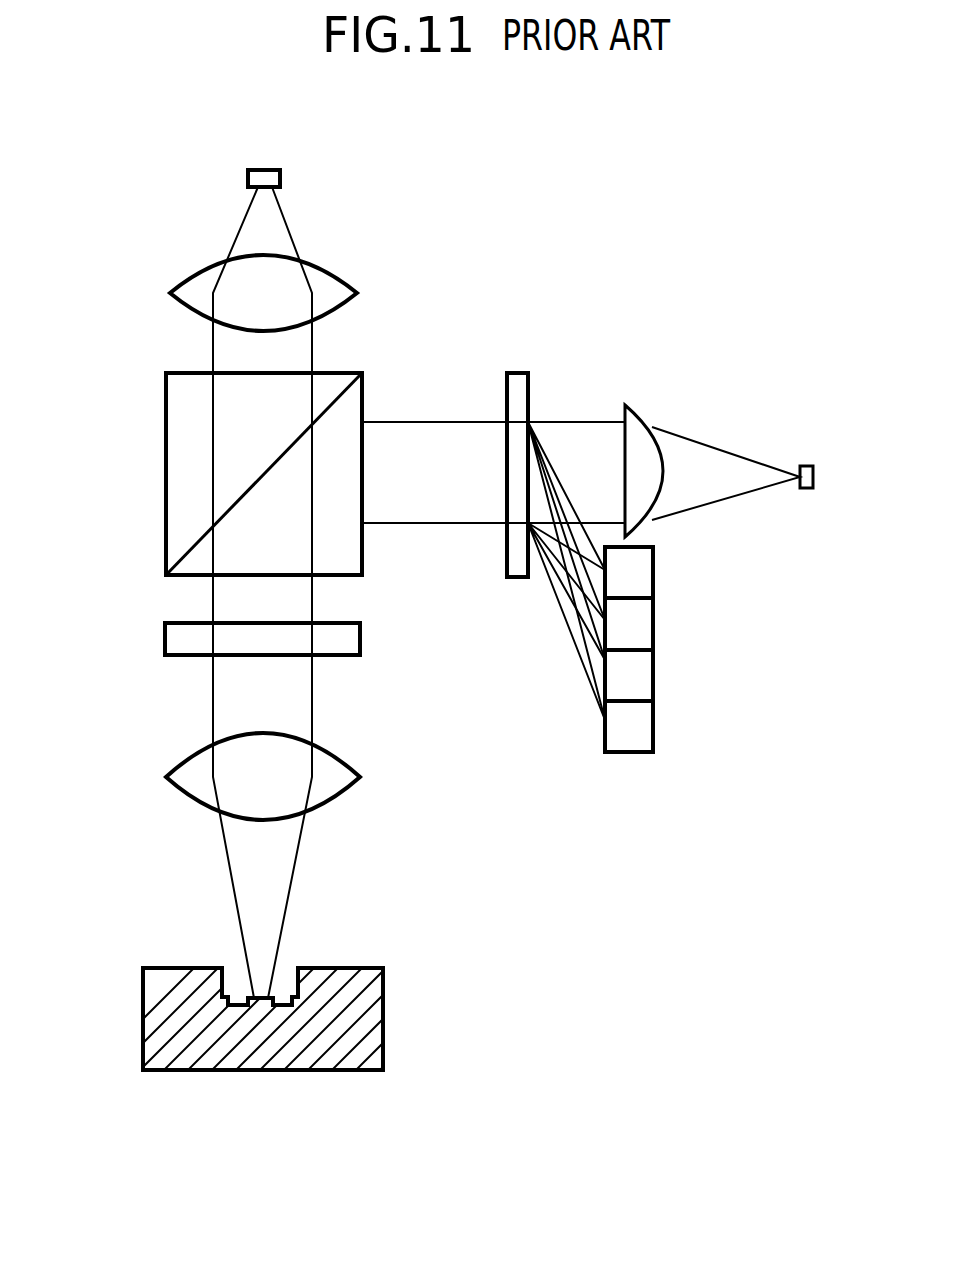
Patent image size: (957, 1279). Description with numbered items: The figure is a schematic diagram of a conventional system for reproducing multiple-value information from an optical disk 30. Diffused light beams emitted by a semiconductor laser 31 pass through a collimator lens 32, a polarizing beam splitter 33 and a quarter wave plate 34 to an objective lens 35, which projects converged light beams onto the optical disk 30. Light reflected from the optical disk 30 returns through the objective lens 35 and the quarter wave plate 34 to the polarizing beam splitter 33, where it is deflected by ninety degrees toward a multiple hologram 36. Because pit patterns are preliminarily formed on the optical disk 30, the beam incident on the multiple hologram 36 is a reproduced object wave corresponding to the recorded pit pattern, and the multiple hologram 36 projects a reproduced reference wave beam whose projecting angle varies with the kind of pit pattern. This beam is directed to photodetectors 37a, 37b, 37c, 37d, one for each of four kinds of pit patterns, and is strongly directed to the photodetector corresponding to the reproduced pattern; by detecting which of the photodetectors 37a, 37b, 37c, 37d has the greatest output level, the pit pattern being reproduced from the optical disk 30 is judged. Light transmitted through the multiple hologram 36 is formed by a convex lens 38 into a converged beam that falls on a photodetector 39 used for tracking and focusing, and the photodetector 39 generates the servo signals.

The optical disk 30 is at (170, 1060).
The semiconductor laser 31 is at (248, 178).
The collimator lens 32 is at (190, 279).
The polarizing beam splitter 33 is at (166, 415).
The quarter wave plate 34 is at (166, 628).
The objective lens 35 is at (172, 770).
The multiple hologram 36 is at (512, 373).
The photodetector 37a is at (643, 581).
The photodetector 37b is at (643, 628).
The photodetector 37c is at (643, 678).
The photodetector 37d is at (643, 730).
The convex lens 38 is at (625, 407).
The photodetector 39 is at (805, 466).